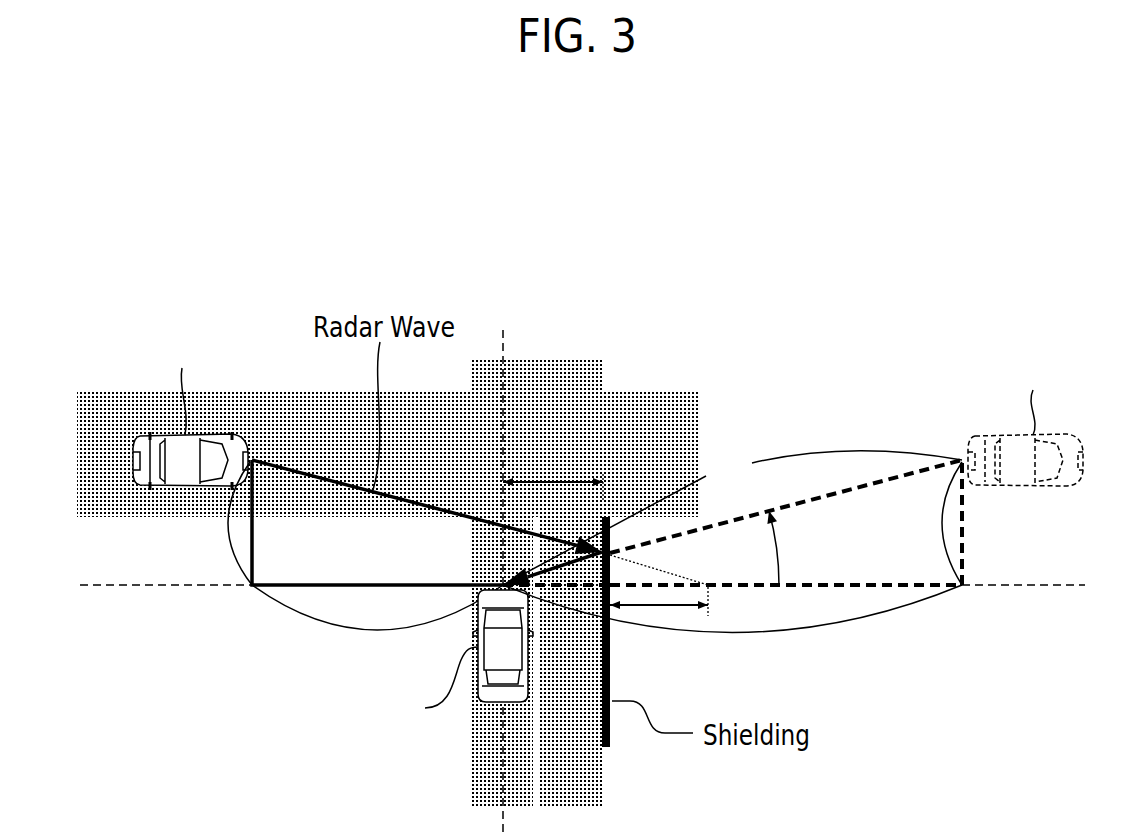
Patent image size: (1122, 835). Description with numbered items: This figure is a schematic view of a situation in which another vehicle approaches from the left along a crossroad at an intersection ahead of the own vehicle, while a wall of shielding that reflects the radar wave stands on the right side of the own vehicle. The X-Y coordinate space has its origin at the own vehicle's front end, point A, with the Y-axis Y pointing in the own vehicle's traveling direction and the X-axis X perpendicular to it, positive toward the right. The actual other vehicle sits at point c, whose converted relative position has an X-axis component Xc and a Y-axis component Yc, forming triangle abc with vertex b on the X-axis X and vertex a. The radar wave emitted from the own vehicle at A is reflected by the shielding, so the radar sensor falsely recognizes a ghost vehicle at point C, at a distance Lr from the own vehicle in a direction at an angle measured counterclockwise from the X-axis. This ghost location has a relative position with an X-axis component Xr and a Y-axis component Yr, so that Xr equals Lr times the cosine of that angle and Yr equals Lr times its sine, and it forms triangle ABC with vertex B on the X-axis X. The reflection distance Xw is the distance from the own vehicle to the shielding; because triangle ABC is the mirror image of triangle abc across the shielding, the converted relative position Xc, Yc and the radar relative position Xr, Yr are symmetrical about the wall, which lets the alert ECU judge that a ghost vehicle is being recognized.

The own vehicle location (origin) A is at (401, 639).
The vertex B of triangle ABC B is at (739, 604).
The ghost vehicle location C is at (863, 473).
The vertex a of triangle abc a is at (665, 570).
The vertex b of triangle abc b is at (373, 539).
The actual other vehicle location c is at (180, 397).
The X-axis X is at (593, 588).
The Y-axis Y is at (502, 564).
The reflection distance Xw is at (605, 544).
The X-axis component of converted relative position Xc is at (377, 614).
The Y-axis component of converted relative position Yc is at (223, 523).
The X-axis component of relative position Xr is at (732, 615).
The Y-axis component of relative position Yr is at (940, 523).
The distance to the detected object Lr is at (732, 518).